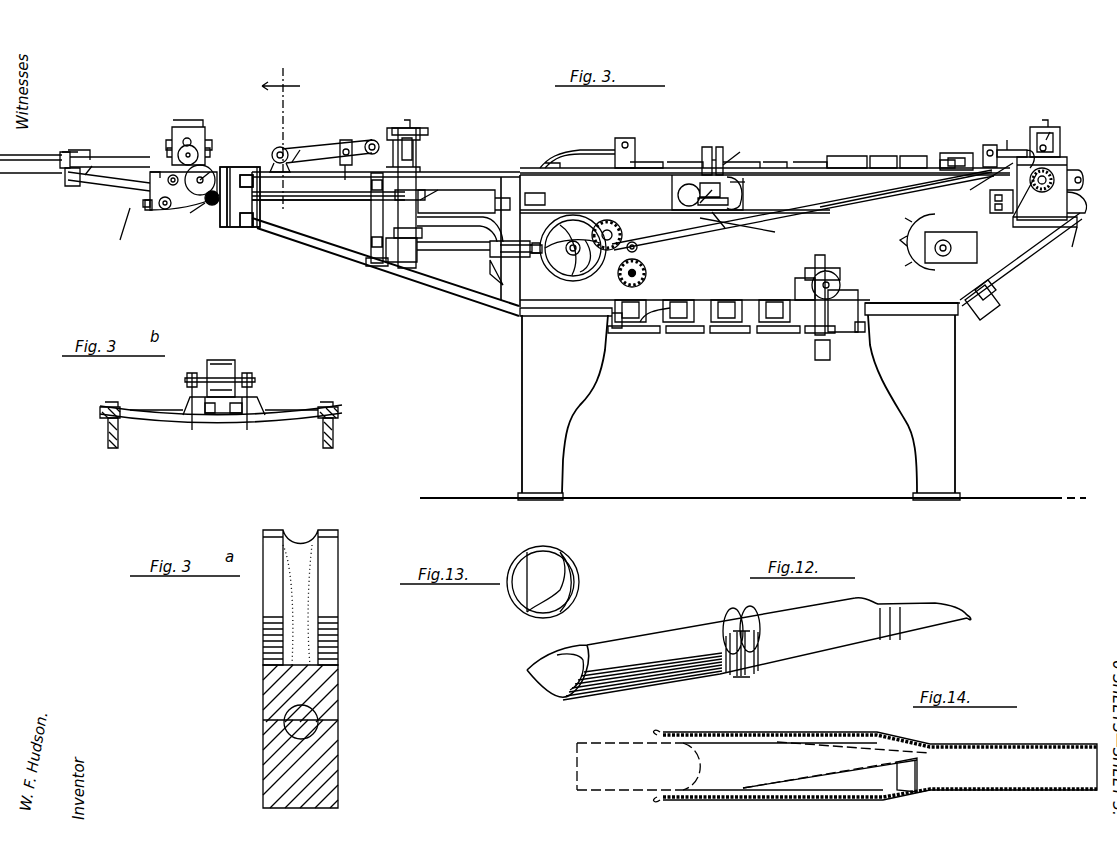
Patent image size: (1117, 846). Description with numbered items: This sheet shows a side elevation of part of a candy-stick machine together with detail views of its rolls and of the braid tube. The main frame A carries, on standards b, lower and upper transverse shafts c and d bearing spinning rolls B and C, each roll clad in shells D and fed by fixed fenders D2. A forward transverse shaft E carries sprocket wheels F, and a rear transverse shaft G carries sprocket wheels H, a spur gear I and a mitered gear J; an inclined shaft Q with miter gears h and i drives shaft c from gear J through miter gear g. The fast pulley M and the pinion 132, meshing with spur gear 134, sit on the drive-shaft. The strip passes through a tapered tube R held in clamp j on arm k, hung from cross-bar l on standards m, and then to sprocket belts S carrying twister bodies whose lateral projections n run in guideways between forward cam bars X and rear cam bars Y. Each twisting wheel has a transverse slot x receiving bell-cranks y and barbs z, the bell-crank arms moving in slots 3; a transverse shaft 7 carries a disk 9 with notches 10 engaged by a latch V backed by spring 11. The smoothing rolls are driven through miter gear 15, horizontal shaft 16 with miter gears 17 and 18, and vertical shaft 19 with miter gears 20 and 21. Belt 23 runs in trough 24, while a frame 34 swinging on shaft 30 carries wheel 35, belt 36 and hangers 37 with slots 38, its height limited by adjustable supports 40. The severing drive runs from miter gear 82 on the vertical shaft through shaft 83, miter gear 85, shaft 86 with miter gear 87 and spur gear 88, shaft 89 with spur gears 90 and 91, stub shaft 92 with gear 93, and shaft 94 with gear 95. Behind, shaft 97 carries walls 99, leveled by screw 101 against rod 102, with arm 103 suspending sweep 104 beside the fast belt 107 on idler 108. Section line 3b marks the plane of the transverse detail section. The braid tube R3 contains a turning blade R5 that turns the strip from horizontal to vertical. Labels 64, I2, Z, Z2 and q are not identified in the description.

In FIG. 3, the transverse slots 3 is at (775, 395).
In FIG. 3, the transverse shaft 7 is at (827, 262).
In FIG. 3, the disk 9 is at (690, 201).
In FIG. 3, the notches 10 is at (895, 265).
In FIG. 3, the spring 11 is at (745, 385).
In FIG. 3, the miter gear 15 is at (425, 192).
In FIG. 3, the horizontal shaft 16 is at (465, 250).
In FIG. 3, the miter gear 17 is at (520, 280).
In FIG. 3, the miter gear 18 is at (402, 262).
In FIG. 3, the vertical shaft 19 is at (438, 190).
In FIG. 3, the miter gear 20 is at (418, 150).
In FIG. 3, the miter gear 21 is at (415, 240).
In FIG. 3B, the longitudinal belt 23 is at (212, 416).
In FIG. 3B, the longitudinal trough 24 is at (238, 416).
In FIG. 3, the shaft 30 is at (402, 128).
In FIG. 3, the vertically swinging frame 34 is at (318, 192).
In FIG. 3B, the vertically swinging frame 34 is at (250, 372).
In FIG. 3, the wheel 35 is at (275, 146).
In FIG. 3B, the wheel 35 is at (195, 372).
In FIG. 3, the belt 36 is at (346, 140).
In FIG. 3B, the belt 36 is at (225, 362).
In FIG. 3, the hangers 37 is at (335, 145).
In FIG. 3, the slots 38 is at (348, 180).
In FIG. 3, the vertically adjustable supports 40 is at (300, 150).
In FIG. 3B, the vertically adjustable supports 40 is at (280, 425).
In FIG. 3, the bracket 64 is at (372, 220).
In FIG. 3, the miter gear 82 is at (430, 207).
In FIG. 3, the horizontal shaft 83 is at (318, 200).
In FIG. 3, the miter gear 85 is at (238, 227).
In FIG. 3, the transverse shaft 86 is at (212, 205).
In FIG. 3, the miter gear 87 is at (190, 213).
In FIG. 3, the spur gear 88 is at (178, 200).
In FIG. 3, the transverse shaft 89 is at (210, 172).
In FIG. 3, the spur gear 90 is at (150, 196).
In FIG. 3, the spur gear 91 is at (155, 170).
In FIG. 3, the stub shaft 92 is at (183, 140).
In FIG. 3, the spur gear 93 is at (196, 148).
In FIG. 3, the short shaft 94 is at (205, 135).
In FIG. 3, the spur gear 95 is at (185, 130).
In FIG. 3, the transverse shaft 97 is at (100, 157).
In FIG. 3, the walls 99 is at (50, 268).
In FIG. 3, the screw 101 is at (145, 205).
In FIG. 3, the transverse rod 102 is at (120, 240).
In FIG. 3, the arm 103 is at (70, 148).
In FIG. 3, the sweep 104 is at (30, 175).
In FIG. 3, the fast belt 107 is at (70, 186).
In FIG. 3, the idler 108 is at (85, 190).
In FIG. 3, the pinion 132 is at (650, 256).
In FIG. 3, the spur gear 134 is at (646, 276).
In FIG. 3, the section line 3b is at (281, 129).
In FIG. 3, the main frame A is at (976, 259).
In FIG. 3, the spinning roll B is at (1062, 170).
In FIG. 3A, the spinning roll B is at (268, 780).
In FIG. 3, the spinning roll C is at (1055, 135).
In FIG. 3A, the spinning roll C is at (258, 618).
In FIG. 3A, the shells D is at (358, 770).
In FIG. 3, the fixed fenders D2 is at (1088, 209).
In FIG. 3, the transverse shaft E is at (945, 255).
In FIG. 3, the sprocket wheels F is at (905, 235).
In FIG. 3, the transverse shaft G is at (555, 268).
In FIG. 3, the sprocket wheels H is at (590, 233).
In FIG. 3, the spur gear I is at (598, 335).
In FIG. 3, the post I2 is at (985, 148).
In FIG. 3, the gear J is at (578, 272).
In FIG. 3, the fast pulley M is at (660, 324).
In FIG. 3, the longitudinal inclined shaft Q is at (742, 235).
In FIG. 3, the fixed tube R is at (990, 200).
In FIG. 13, the tube R3 is at (540, 546).
In FIG. 12, the tube R3 is at (685, 620).
In FIG. 14, the tube R3 is at (838, 730).
In FIG. 13, the interior blade R5 is at (520, 612).
In FIG. 14, the interior blade R5 is at (915, 792).
In FIG. 3, the sprocket belts S is at (795, 285).
In FIG. 3, the latches V is at (738, 183).
In FIG. 3, the forward cam bars X is at (948, 135).
In FIG. 3, the rear cam bars Y is at (575, 166).
In FIG. 3, the block Z is at (830, 146).
In FIG. 3, the block Z2 is at (728, 322).
In FIG. 3, the standards b is at (1060, 245).
In FIG. 3, the lower transverse shaft c is at (1075, 188).
In FIG. 3, the upper transverse shaft d is at (1050, 132).
In FIG. 3, the miter gear g is at (1052, 182).
In FIG. 3, the miter gear h is at (620, 228).
In FIG. 3, the miter gear i is at (1025, 227).
In FIG. 3, the clamp j is at (1020, 150).
In FIG. 3, the arm k is at (1007, 140).
In FIG. 3, the cross-bar l is at (906, 189).
In FIG. 3, the standards m is at (970, 191).
In FIG. 3, the lateral projections n is at (818, 262).
In FIG. 3, the pivot q is at (690, 215).
In FIG. 3, the transverse slot x is at (952, 130).
In FIG. 3, the bell-cranks y is at (752, 384).
In FIG. 3, the barbs z is at (1000, 305).